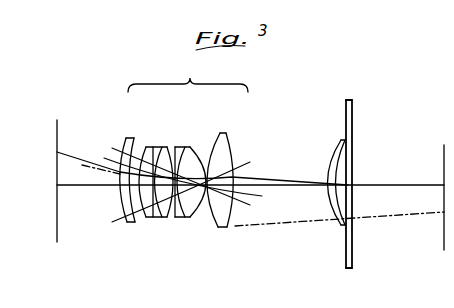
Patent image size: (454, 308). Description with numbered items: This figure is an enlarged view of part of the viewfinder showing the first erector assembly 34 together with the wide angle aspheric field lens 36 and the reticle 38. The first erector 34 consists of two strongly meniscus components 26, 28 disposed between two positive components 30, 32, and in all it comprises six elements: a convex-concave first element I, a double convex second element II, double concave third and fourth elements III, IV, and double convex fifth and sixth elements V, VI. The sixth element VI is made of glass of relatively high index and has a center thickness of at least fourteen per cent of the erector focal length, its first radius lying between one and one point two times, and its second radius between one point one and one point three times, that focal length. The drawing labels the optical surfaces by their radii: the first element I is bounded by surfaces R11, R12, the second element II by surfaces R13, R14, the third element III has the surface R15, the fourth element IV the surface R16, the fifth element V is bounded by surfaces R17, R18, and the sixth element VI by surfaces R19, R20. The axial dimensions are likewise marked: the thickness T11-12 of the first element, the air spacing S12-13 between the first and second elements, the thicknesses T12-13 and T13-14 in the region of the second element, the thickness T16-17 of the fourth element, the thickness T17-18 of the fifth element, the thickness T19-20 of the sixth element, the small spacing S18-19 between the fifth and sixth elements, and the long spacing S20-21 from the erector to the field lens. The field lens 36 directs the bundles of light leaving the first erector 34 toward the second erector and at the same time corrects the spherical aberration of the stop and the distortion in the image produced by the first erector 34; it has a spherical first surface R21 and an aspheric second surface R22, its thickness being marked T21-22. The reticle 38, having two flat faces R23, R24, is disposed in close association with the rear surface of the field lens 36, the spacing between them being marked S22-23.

The positive component 30 is at (124, 141).
The positive component 32 is at (232, 200).
The first erector assembly 34 is at (182, 167).
The field lens 36 is at (338, 221).
The reticle 38 is at (350, 101).
The strongly meniscus component 26 is at (172, 113).
The strongly meniscus component 28 is at (208, 113).
The first element I is at (105, 172).
The second element II is at (127, 184).
The third element III is at (159, 184).
The fourth element IV is at (205, 185).
The fifth element V is at (218, 177).
The sixth element VI is at (234, 130).
The first radius of first element R11 is at (124, 219).
The second radius of first element R12 is at (131, 216).
The first radius of second element R13 is at (141, 218).
The second radius of second element R14 is at (153, 218).
The radius of third element R15 is at (168, 218).
The radius of fourth element R16 is at (176, 218).
The first radius of fifth element R17 is at (182, 218).
The second radius of fifth element R18 is at (196, 220).
The first radius of sixth element R19 is at (222, 229).
The second radius of sixth element R20 is at (232, 213).
The first surface of field lens R21 is at (332, 181).
The second surface of field lens R22 is at (340, 168).
The first flat face of reticle R23 is at (346, 261).
The second flat face of reticle R24 is at (353, 233).
The thickness of first element T11-12 is at (128, 157).
The spacing between first and second elements S12-13 is at (121, 176).
The thickness between surfaces 12 and 13 T12-13 is at (128, 198).
The thickness of second element T13-14 is at (130, 204).
The thickness of fourth element T16-17 is at (205, 160).
The thickness of fifth element T17-18 is at (216, 158).
The thickness of sixth element T19-20 is at (222, 170).
The spacing between fifth and sixth elements S18-19 is at (232, 191).
The spacing between erector and field lens S20-21 is at (285, 182).
The thickness between surfaces 21 and 22 T21-22 is at (340, 168).
The spacing between surfaces 22 and 23 S22-23 is at (353, 190).